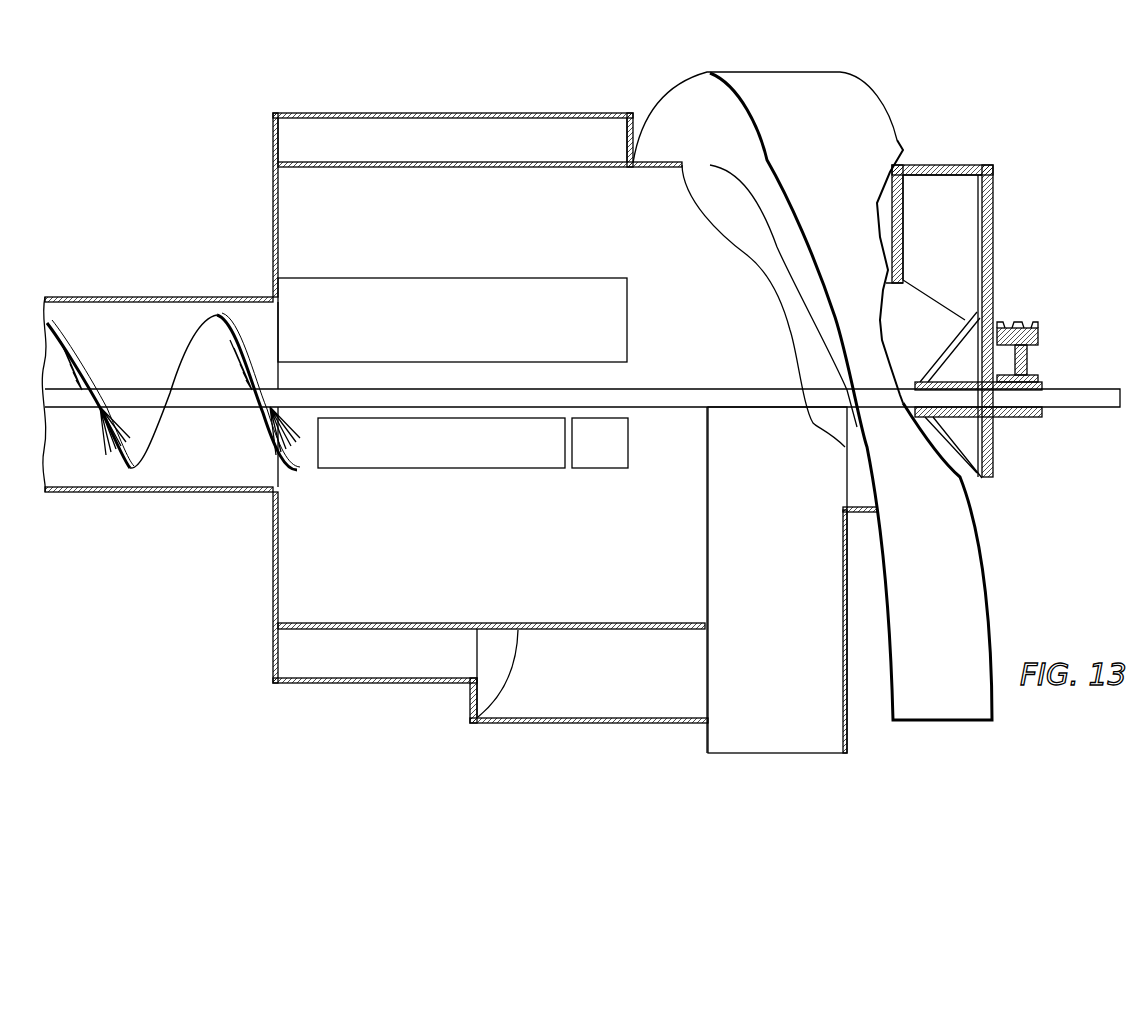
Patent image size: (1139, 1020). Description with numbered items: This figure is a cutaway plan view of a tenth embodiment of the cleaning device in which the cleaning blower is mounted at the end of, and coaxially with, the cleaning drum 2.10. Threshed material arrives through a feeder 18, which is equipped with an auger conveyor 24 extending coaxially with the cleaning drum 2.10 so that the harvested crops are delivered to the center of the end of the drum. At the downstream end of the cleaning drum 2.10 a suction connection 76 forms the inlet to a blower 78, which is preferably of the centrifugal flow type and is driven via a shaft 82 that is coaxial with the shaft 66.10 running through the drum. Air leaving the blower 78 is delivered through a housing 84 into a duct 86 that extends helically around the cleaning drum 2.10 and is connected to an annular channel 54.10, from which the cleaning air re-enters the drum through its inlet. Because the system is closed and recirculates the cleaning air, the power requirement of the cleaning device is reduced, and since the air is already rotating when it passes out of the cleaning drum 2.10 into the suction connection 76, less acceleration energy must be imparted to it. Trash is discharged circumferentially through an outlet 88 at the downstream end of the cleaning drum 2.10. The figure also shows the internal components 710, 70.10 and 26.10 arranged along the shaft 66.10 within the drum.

The feeder 18 is at (130, 278).
The auger conveyor 24 is at (85, 365).
The cleaning drum 2.10 is at (273, 195).
The annular channel 54.10 is at (520, 133).
The upper component 710 is at (476, 339).
The lower component 70.10 is at (476, 460).
The small component 26.10 is at (600, 453).
The shaft 66.10 is at (708, 378).
The duct 86 is at (848, 115).
The blower 78 is at (937, 166).
The housing 84 is at (993, 212).
The suction connection 76 is at (925, 345).
The shaft 82 is at (1090, 410).
The outlet 88 is at (786, 673).